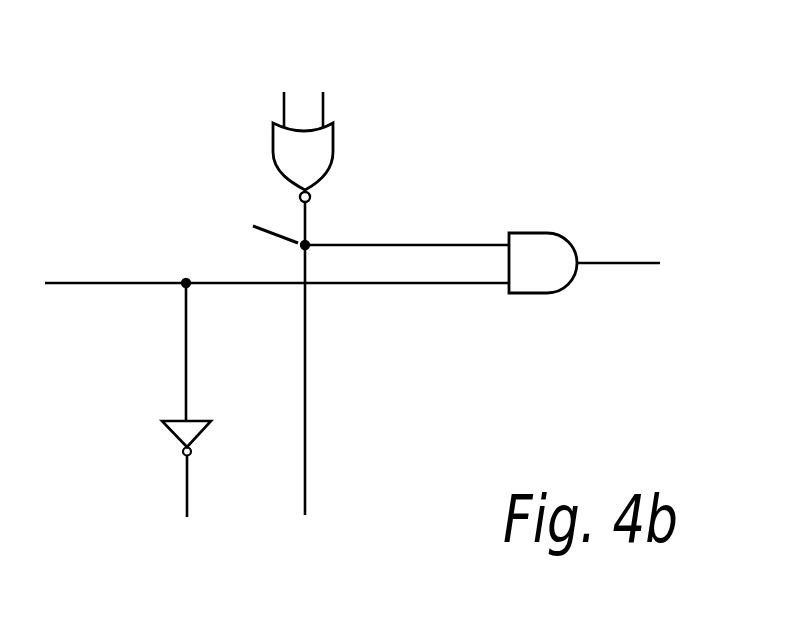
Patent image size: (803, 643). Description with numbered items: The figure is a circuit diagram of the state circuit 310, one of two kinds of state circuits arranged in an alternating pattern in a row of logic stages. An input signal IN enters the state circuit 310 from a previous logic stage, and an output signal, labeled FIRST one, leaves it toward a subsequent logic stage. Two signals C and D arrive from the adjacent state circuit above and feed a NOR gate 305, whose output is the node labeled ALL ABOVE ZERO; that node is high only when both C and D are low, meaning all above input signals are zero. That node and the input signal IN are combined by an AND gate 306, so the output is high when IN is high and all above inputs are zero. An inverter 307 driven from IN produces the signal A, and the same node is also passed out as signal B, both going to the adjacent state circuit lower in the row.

The NOR gate 305 is at (288, 148).
The AND gate 306 is at (527, 280).
The inverter 307 is at (177, 430).
The state circuit 310 is at (492, 129).